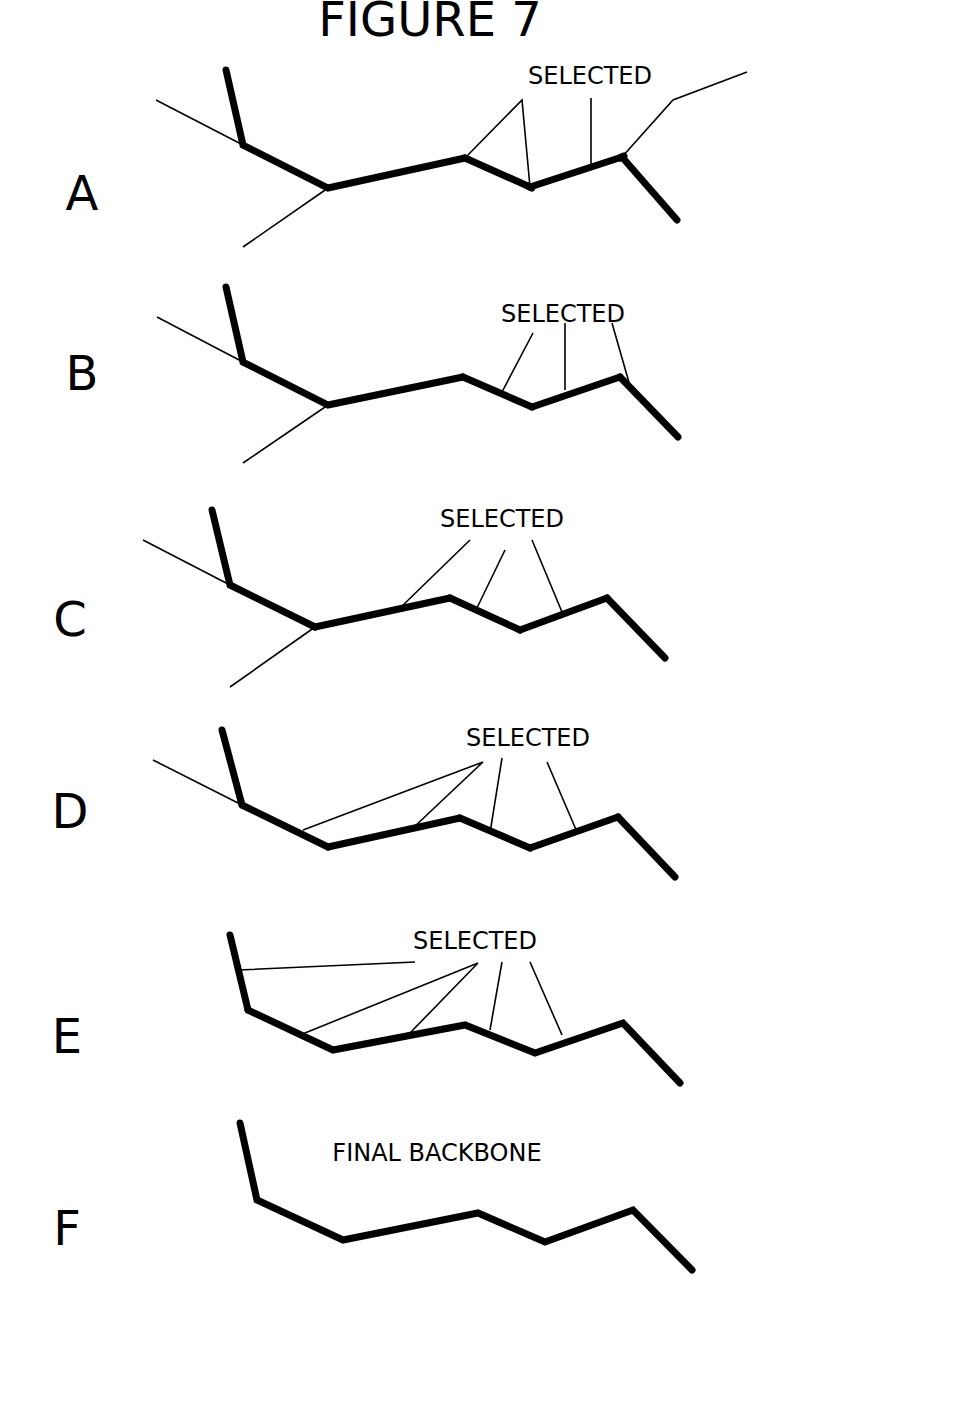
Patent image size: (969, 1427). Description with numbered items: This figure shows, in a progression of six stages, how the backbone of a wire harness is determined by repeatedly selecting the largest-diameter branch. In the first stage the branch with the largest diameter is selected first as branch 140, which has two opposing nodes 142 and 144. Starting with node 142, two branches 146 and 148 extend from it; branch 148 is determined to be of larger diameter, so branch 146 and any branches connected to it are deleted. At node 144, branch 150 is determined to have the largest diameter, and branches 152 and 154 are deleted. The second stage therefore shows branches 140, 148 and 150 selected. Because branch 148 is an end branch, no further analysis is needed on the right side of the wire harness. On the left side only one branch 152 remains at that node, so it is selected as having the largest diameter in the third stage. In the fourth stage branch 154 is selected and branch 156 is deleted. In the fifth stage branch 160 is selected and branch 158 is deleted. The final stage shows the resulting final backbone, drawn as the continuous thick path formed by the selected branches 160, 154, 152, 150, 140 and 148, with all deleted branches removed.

The branch 140 is at (576, 176).
The node 142 is at (619, 171).
The node 144 is at (526, 189).
The branch 146 is at (659, 124).
The branch 148 is at (662, 193).
The branch 150 is at (472, 165).
The branch 152 is at (479, 137).
The branch 154 is at (277, 818).
The branch 156 is at (284, 655).
The branch 158 is at (193, 787).
The branch 160 is at (224, 950).